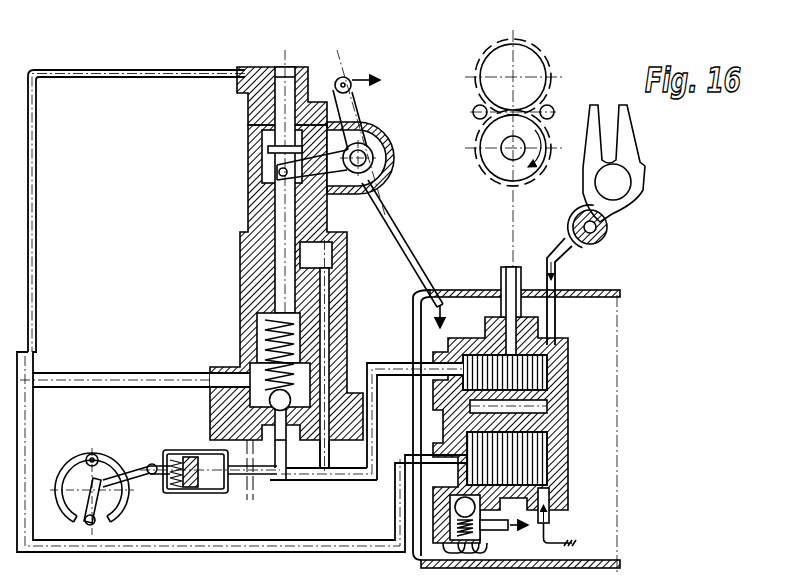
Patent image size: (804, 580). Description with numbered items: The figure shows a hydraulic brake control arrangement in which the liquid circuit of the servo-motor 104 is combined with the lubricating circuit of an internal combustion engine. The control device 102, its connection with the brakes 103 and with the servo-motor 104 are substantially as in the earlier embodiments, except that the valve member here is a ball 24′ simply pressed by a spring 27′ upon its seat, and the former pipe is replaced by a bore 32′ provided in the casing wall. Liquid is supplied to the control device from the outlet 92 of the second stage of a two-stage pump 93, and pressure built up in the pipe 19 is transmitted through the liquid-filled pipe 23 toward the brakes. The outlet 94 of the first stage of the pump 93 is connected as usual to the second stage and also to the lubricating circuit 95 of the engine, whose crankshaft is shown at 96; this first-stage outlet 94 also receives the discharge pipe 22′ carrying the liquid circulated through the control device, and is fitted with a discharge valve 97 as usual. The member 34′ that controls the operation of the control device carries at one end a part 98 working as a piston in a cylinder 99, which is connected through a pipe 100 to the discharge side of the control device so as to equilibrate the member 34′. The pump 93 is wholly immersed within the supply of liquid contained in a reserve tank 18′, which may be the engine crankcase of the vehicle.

The reserve tank 18′ is at (444, 290).
The pipe 19 is at (262, 478).
The discharge pipe 22′ is at (124, 376).
The pipe 23 is at (372, 482).
The ball 24′ is at (266, 418).
The spring 27′ is at (300, 341).
The bore 32′ is at (331, 270).
The member 34′ is at (275, 215).
The outlet of the second stage 92 is at (372, 364).
The two-stage pump 93 is at (450, 410).
The outlet of the first stage 94 is at (452, 441).
The lubricating circuit 95 is at (557, 265).
The crankshaft 96 is at (573, 221).
The discharge valve 97 is at (452, 513).
The part 98 is at (268, 148).
The cylinder 99 is at (250, 100).
The pipe 100 is at (160, 78).
The control device 102 is at (246, 294).
The brakes 103 is at (113, 508).
The servo-motor 104 is at (214, 494).